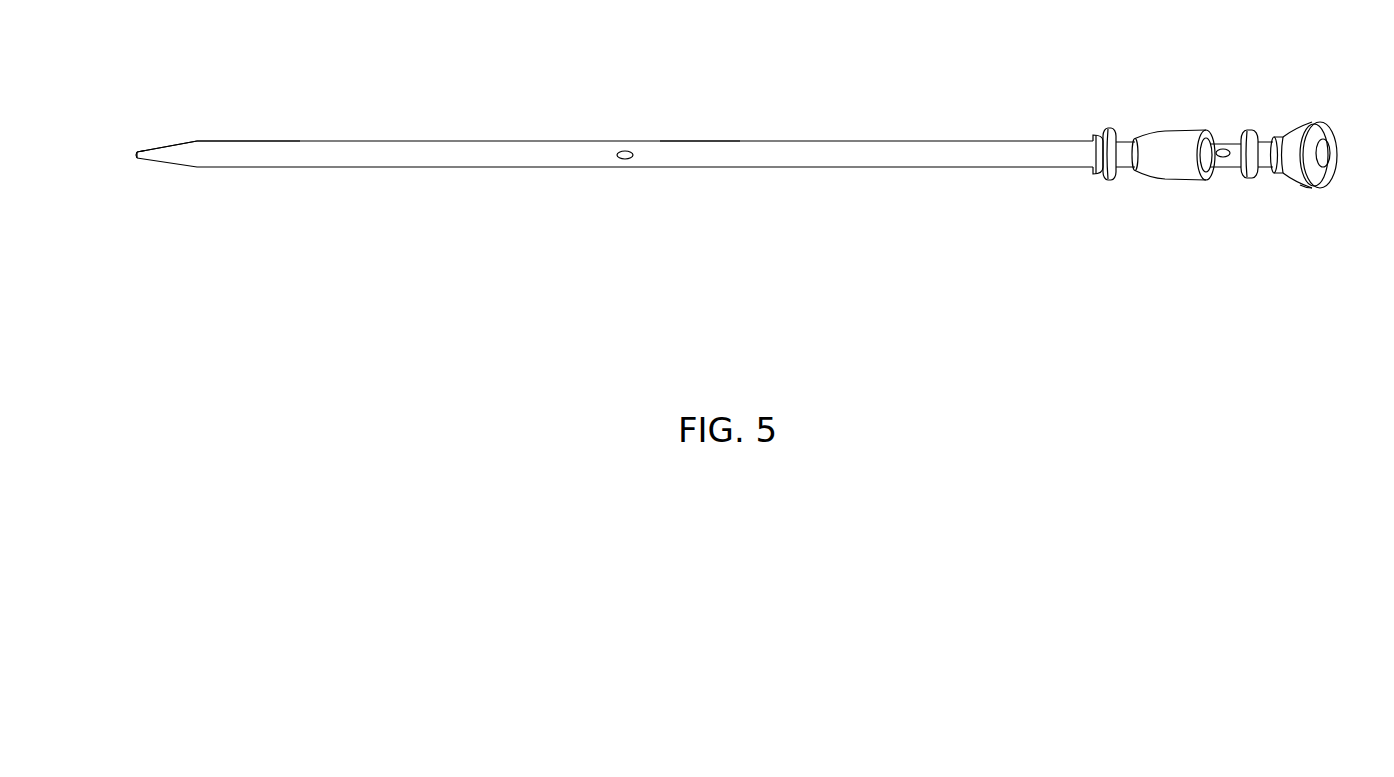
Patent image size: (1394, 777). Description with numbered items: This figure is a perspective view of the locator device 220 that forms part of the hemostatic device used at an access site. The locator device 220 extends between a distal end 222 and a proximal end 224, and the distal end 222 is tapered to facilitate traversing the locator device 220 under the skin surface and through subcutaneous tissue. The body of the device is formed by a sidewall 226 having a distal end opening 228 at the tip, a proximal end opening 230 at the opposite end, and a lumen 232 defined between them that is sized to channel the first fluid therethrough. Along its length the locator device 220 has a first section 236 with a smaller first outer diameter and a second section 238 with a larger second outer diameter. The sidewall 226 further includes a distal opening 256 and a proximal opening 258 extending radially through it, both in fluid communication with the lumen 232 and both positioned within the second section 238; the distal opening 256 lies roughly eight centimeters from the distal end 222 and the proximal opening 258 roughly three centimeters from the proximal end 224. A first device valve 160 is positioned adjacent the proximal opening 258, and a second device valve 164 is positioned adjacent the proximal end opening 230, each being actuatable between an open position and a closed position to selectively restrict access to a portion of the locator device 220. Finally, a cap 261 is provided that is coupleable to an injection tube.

The locator device 220 is at (752, 286).
The distal end 222 is at (139, 171).
The proximal end 224 is at (1293, 102).
The sidewall 226 is at (397, 140).
The distal end opening 228 is at (134, 150).
The proximal end opening 230 is at (1330, 146).
The lumen 232 is at (692, 153).
The first section 236 is at (175, 134).
The second section 238 is at (302, 127).
The distal opening 256 is at (627, 159).
The proximal opening 258 is at (1227, 139).
The cap 261 is at (1102, 178).
The first device valve 160 is at (1183, 168).
The second device valve 164 is at (1311, 189).